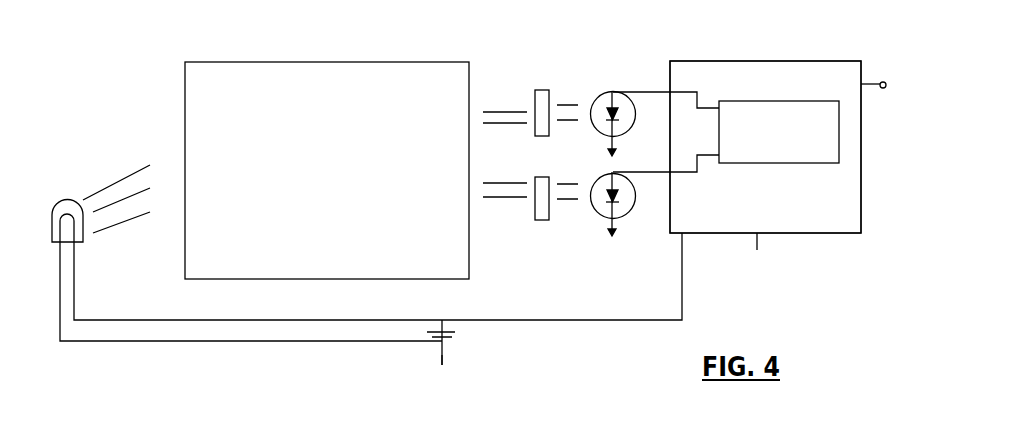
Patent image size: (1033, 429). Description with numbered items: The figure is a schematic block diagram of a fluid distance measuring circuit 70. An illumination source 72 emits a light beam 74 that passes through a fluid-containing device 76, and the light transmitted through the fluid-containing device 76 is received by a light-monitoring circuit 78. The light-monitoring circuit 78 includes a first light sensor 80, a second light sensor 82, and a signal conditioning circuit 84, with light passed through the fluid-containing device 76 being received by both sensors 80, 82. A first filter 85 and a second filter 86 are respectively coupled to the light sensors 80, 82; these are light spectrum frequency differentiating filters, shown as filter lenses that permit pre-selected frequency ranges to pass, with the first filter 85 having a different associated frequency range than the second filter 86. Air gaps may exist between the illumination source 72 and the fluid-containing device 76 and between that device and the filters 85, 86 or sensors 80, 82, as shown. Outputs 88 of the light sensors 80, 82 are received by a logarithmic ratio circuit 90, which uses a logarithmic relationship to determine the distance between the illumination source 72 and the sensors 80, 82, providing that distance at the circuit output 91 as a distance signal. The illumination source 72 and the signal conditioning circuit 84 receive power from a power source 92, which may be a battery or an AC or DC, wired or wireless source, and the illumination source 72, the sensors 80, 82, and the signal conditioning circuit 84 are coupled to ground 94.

The fluid distance measuring circuit 70 is at (129, 91).
The illumination source 72 is at (65, 198).
The light beam 74 is at (120, 227).
The fluid-containing device 76 is at (292, 62).
The light-monitoring circuit 78 is at (822, 43).
The first light sensor 80 is at (603, 91).
The second light sensor 82 is at (597, 218).
The signal conditioning circuit 84 is at (746, 61).
The first filter 85 is at (542, 90).
The second filter 86 is at (535, 210).
The outputs 88 is at (660, 92).
The logarithmic ratio circuit 90 is at (768, 101).
The circuit output 91 is at (885, 82).
The power source 92 is at (438, 331).
The ground 94 is at (758, 249).